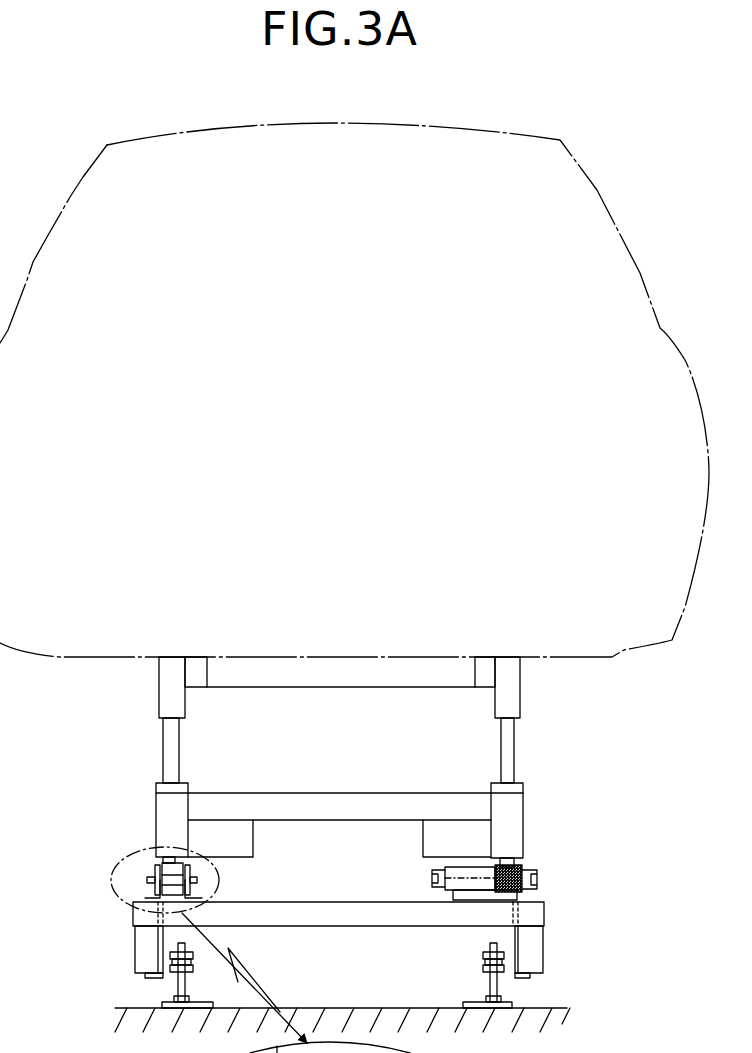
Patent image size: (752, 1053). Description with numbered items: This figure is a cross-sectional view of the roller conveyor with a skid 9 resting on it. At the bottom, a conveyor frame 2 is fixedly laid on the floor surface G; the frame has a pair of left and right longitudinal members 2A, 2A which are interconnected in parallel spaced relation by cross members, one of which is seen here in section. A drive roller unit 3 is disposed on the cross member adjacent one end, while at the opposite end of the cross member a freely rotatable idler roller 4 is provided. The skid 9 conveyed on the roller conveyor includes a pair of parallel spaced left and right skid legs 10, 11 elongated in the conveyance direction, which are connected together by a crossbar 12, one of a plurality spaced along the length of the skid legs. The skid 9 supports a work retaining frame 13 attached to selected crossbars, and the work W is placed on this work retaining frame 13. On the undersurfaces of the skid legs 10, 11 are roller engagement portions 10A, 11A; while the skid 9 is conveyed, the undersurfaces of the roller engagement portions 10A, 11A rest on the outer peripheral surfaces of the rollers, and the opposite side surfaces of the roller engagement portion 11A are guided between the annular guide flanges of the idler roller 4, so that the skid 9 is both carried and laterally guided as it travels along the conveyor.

The work W is at (395, 123).
The work retaining frame 13 is at (510, 687).
The skid 9 is at (340, 833).
The crossbar 12 is at (363, 797).
The skid leg 11 is at (165, 807).
The skid leg 10 is at (510, 808).
The roller engagement portion 11A is at (170, 860).
The roller engagement portion 10A is at (503, 860).
The idler roller 4 is at (170, 877).
The drive roller unit 3 is at (548, 875).
The conveyor frame 2 is at (549, 915).
The longitudinal member 2A is at (143, 950).
The floor surface G is at (360, 1008).